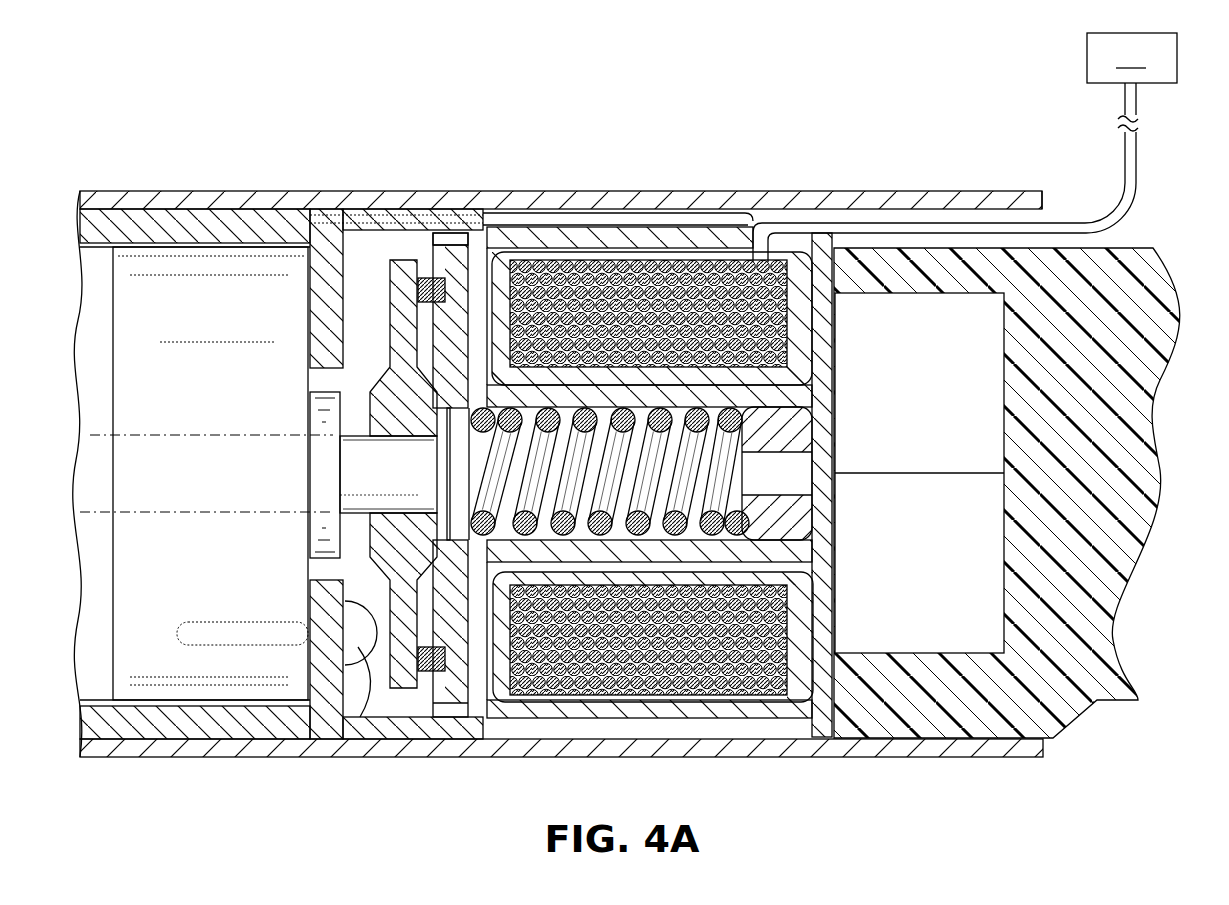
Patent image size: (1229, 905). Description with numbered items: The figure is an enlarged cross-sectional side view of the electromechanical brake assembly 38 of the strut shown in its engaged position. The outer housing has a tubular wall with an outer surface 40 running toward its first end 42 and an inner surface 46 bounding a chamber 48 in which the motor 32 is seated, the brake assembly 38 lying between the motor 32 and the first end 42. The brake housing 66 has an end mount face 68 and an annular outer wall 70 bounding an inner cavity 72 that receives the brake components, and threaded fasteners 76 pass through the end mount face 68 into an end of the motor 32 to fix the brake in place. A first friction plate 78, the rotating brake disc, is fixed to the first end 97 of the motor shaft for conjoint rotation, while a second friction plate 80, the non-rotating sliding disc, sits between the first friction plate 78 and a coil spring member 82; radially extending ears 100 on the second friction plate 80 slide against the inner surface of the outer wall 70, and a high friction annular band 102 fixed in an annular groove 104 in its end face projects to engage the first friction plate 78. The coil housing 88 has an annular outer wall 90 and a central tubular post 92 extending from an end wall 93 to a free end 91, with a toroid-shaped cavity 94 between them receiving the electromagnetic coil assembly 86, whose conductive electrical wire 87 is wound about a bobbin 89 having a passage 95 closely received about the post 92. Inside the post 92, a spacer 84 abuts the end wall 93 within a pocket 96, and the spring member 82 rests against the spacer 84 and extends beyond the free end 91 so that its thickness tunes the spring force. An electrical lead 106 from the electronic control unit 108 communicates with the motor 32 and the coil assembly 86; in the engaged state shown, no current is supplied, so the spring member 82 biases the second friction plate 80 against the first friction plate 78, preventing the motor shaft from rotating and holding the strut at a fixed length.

The motor 32 is at (250, 262).
The electromechanical brake assembly 38 is at (866, 551).
The outer surface 40 is at (876, 188).
The first end 42 is at (1048, 198).
The inner surface 46 is at (898, 212).
The chamber 48 is at (1042, 242).
The brake housing 66 is at (318, 746).
The end mount face 68 is at (307, 720).
The annular outer wall 70 is at (397, 732).
The inner cavity 72 is at (375, 312).
The threaded fasteners 76 is at (366, 657).
The first friction plate 78 is at (382, 273).
The second friction plate 80 is at (419, 695).
The spring member 82 is at (742, 487).
The spacer 84 is at (808, 410).
The electromagnetic coil assembly 86 is at (788, 703).
The conductive electrical wire 87 is at (735, 692).
The coil housing 88 is at (532, 724).
The bobbin 89 is at (800, 700).
The annular outer wall 90 is at (625, 712).
The free end 91 is at (478, 553).
The tubular post 92 is at (800, 383).
The end wall 93 is at (832, 500).
The toroid-shaped cavity 94 is at (806, 617).
The passage 95 is at (832, 563).
The pocket 96 is at (462, 481).
The first end 97 is at (442, 466).
The ears 100 is at (437, 280).
The annular band 102 is at (421, 278).
The annular groove 104 is at (447, 237).
The electrical lead 106 is at (318, 232).
The electronic control unit 108 is at (1132, 58).